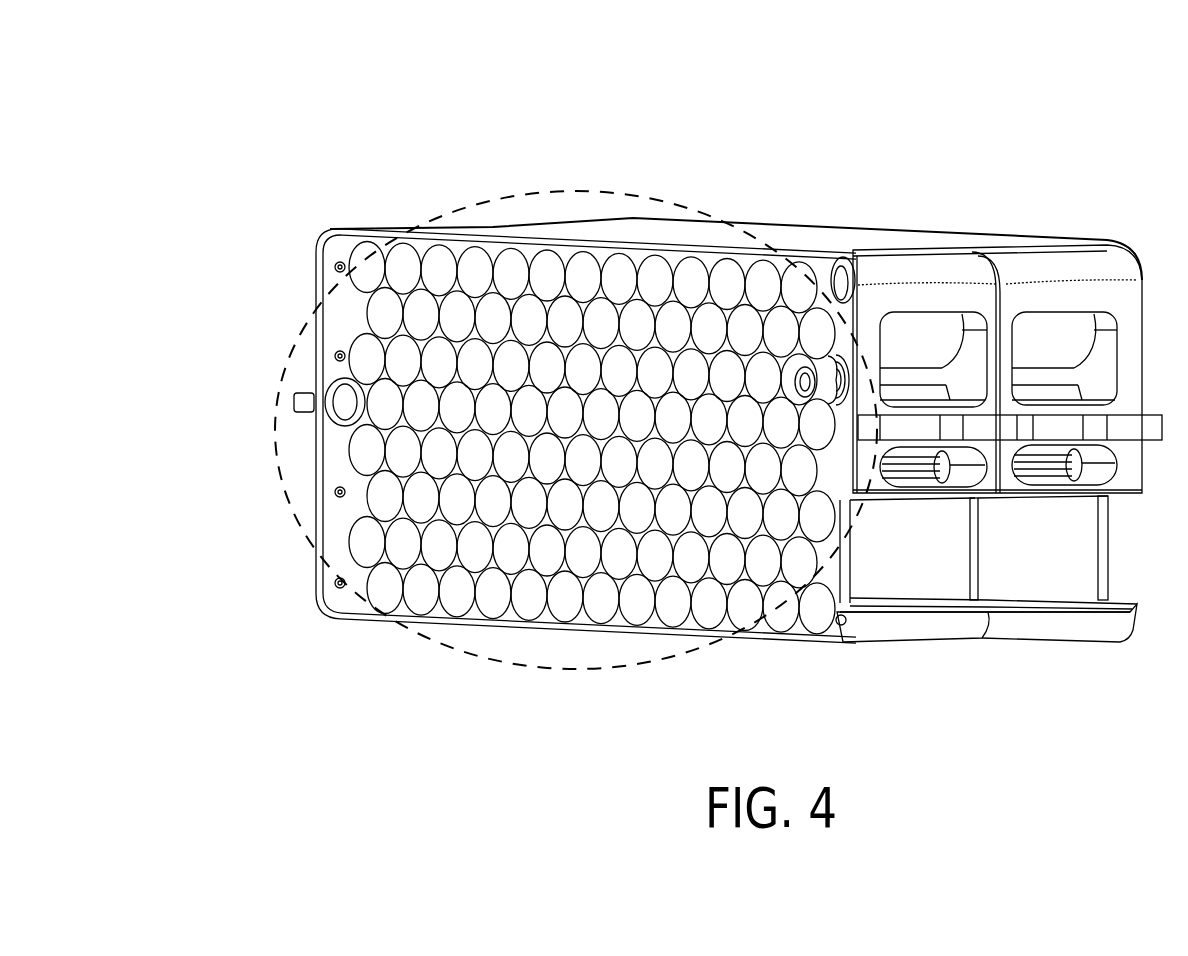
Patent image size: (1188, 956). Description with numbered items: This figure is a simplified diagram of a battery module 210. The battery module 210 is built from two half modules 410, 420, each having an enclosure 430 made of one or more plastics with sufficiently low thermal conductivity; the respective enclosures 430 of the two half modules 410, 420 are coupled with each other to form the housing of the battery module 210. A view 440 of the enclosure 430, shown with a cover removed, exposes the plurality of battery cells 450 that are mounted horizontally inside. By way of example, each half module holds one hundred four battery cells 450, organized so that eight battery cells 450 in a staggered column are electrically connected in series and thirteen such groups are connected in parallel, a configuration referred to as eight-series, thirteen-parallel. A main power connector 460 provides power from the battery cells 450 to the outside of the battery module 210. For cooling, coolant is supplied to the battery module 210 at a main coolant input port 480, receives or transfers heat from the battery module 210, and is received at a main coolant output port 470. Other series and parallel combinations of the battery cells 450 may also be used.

The battery module 210 is at (350, 90).
The half module 410 is at (838, 653).
The half module 420 is at (987, 653).
The enclosure 430 is at (1055, 265).
The view 440 is at (525, 665).
The battery cells 450 is at (657, 280).
The main power connector 460 is at (822, 385).
The main coolant output port 470 is at (847, 288).
The main coolant input port 480 is at (350, 400).